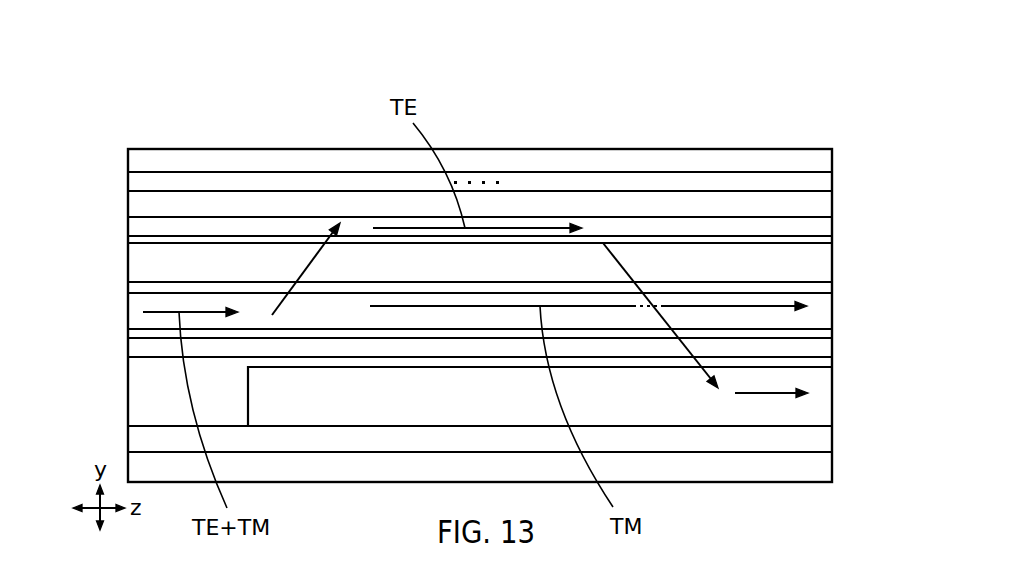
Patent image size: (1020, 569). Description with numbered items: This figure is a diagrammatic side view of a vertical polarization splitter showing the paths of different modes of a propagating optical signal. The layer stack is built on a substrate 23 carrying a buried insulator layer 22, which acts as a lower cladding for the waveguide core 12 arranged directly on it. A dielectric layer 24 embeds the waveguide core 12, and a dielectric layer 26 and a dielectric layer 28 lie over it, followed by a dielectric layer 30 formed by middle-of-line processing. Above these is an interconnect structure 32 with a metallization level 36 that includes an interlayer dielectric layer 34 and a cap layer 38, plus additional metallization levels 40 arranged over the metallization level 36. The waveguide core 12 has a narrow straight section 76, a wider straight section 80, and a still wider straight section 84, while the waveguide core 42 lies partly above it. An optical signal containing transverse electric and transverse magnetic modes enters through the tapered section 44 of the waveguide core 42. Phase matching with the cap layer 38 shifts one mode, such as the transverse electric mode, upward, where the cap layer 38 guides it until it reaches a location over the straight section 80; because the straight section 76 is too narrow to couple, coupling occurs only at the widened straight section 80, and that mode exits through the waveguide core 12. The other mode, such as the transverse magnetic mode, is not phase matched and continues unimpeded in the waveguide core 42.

The waveguide core 12 is at (813, 397).
The buried insulator layer 22 is at (140, 442).
The substrate 23 is at (813, 468).
The dielectric layer 24 is at (140, 375).
The dielectric layer 26 is at (813, 347).
The dielectric layer 28 is at (140, 333).
The dielectric layer 30 is at (140, 287).
The interconnect structure 32 is at (844, 163).
The interlayer dielectric layer 34 is at (813, 263).
The metallization level 36 is at (108, 217).
The cap layer 38 is at (813, 227).
The additional metallization levels 40 is at (108, 150).
The waveguide core 42 is at (813, 307).
The tapered section 44 is at (135, 114).
The straight section 76 is at (226, 87).
The straight section 80 is at (530, 122).
The straight section 84 is at (732, 113).